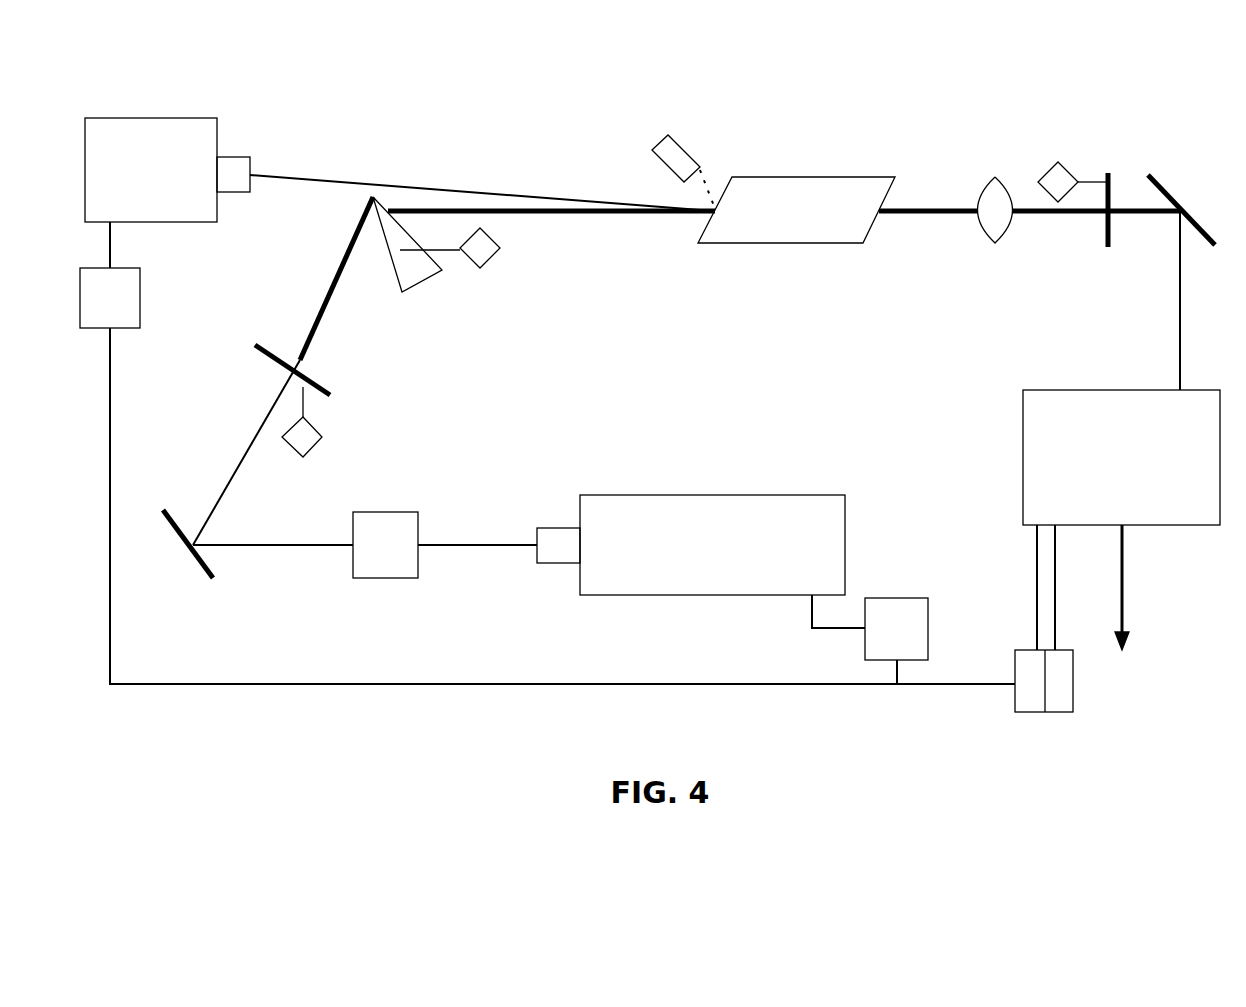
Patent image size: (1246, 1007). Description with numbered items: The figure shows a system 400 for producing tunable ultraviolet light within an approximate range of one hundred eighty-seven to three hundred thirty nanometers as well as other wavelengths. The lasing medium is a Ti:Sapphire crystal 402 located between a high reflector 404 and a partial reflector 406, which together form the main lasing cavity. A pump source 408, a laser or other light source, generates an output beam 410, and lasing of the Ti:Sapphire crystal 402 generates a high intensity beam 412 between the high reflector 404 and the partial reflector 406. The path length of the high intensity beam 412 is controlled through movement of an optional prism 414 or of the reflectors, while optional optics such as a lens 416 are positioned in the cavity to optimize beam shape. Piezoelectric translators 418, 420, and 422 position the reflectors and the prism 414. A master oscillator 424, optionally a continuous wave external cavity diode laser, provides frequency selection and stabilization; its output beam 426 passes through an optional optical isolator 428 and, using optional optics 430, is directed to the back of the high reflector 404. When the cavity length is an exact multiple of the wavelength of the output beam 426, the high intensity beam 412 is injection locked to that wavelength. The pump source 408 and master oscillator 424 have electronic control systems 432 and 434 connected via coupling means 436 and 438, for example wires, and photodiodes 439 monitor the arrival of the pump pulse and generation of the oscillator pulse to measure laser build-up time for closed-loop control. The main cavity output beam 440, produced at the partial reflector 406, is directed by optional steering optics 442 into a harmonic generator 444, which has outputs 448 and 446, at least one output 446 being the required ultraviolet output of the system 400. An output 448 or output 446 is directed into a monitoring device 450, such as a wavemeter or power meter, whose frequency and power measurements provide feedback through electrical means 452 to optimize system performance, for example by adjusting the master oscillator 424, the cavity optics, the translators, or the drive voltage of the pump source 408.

The system 400 is at (945, 772).
The Ti:Sapphire crystal 402 is at (782, 245).
The high reflector 404 is at (327, 383).
The partial reflector 406 is at (1108, 240).
The pump source 408 is at (208, 118).
The output beam 410 is at (418, 185).
The high intensity beam 412 is at (322, 297).
The prism 414 is at (435, 272).
The lens 416 is at (973, 223).
The piezoelectric translator 418 is at (282, 448).
The piezoelectric translator 420 is at (488, 267).
The piezoelectric translator 422 is at (1078, 162).
The master oscillator 424 is at (778, 493).
The output beam 426 is at (227, 480).
The optical isolator 428 is at (380, 578).
The optics 430 is at (203, 567).
The electronic control system 432 is at (128, 328).
The electronic control system 434 is at (897, 598).
The coupling means 436 is at (120, 250).
The coupling means 438 is at (812, 612).
The photodiodes 439 is at (664, 132).
The output beam 440 is at (1138, 210).
The steering optics 442 is at (1167, 184).
The harmonic generator 444 is at (1023, 440).
The output 446 is at (1125, 590).
The outputs 448 is at (1057, 627).
The monitoring device 450 is at (1073, 705).
The electrical means 452 is at (905, 684).